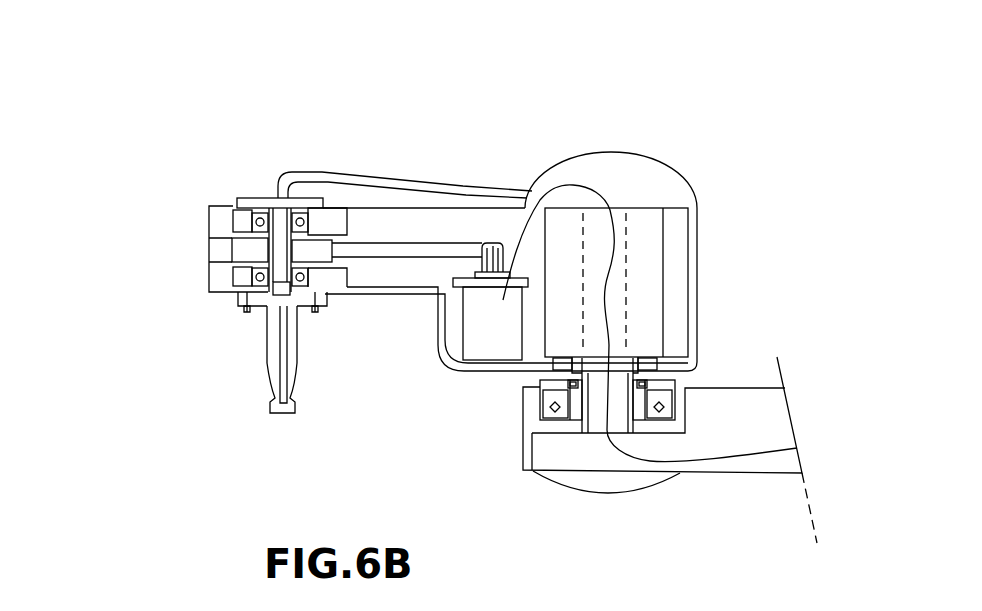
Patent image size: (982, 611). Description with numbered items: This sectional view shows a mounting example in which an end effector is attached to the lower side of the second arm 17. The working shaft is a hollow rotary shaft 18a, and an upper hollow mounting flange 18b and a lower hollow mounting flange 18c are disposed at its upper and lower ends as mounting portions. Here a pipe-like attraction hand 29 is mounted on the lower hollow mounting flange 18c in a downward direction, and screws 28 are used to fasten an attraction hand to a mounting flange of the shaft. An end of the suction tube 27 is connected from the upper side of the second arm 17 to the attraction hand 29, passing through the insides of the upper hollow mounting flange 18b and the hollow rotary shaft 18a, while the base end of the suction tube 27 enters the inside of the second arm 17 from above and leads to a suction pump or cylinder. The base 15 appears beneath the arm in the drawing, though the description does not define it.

The base 15 is at (738, 407).
The second arm 17 is at (458, 215).
The hollow rotary shaft 18a is at (252, 247).
The upper hollow mounting flange 18b is at (240, 198).
The lower hollow mounting flange 18c is at (236, 297).
The suction tube 27 is at (357, 177).
The screws 28 is at (318, 312).
The pipe-like attraction hand 29 is at (266, 366).